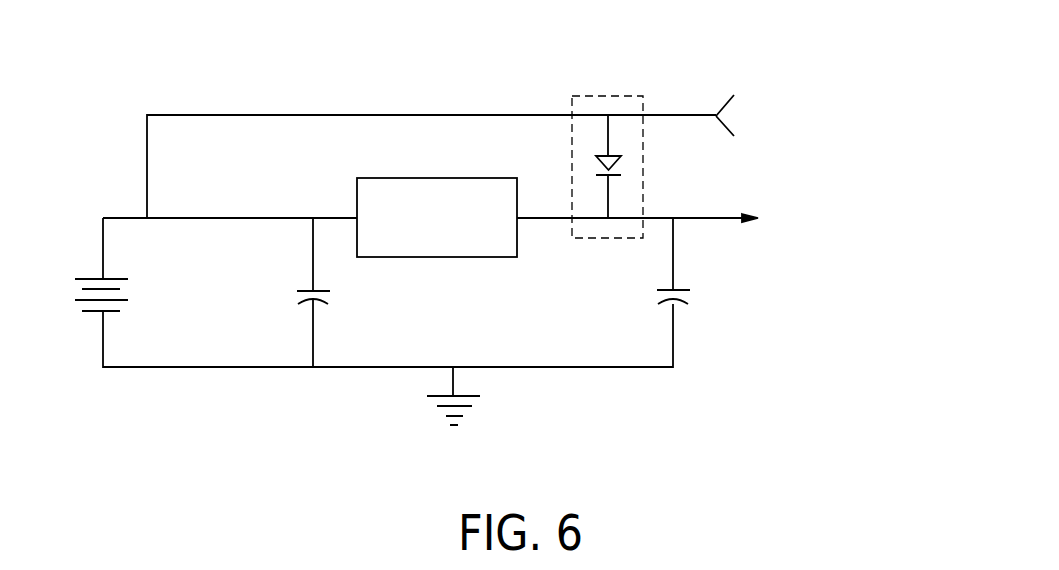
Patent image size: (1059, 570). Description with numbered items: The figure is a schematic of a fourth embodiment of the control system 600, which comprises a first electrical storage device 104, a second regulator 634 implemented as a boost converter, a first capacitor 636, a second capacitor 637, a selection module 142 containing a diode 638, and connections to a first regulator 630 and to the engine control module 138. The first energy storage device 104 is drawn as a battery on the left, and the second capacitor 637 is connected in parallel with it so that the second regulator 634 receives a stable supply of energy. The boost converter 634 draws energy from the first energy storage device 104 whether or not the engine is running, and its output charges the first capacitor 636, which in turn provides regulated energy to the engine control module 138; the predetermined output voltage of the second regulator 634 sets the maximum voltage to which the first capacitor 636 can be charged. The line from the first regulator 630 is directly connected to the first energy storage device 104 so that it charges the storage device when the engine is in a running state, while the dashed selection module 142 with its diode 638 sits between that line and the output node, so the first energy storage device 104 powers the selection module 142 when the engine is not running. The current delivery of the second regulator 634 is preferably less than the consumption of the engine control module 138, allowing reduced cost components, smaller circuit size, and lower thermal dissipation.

The system 600 is at (514, 223).
The first electrical storage device 104 is at (92, 278).
The second regulator 634 is at (412, 177).
The selection module 142 is at (592, 132).
The diode 638 is at (605, 157).
The second capacitor 637 is at (318, 303).
The first capacitor 636 is at (678, 303).
The first regulator 630 is at (832, 116).
The engine control module 138 is at (869, 217).